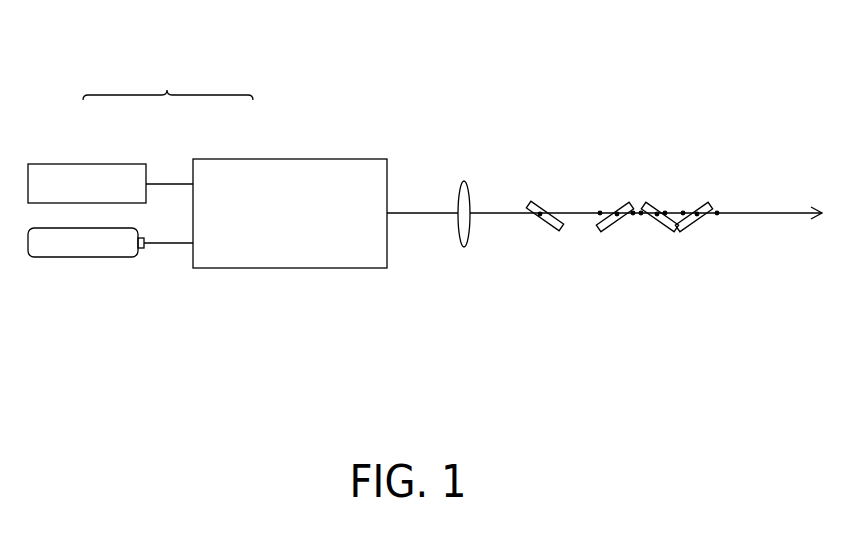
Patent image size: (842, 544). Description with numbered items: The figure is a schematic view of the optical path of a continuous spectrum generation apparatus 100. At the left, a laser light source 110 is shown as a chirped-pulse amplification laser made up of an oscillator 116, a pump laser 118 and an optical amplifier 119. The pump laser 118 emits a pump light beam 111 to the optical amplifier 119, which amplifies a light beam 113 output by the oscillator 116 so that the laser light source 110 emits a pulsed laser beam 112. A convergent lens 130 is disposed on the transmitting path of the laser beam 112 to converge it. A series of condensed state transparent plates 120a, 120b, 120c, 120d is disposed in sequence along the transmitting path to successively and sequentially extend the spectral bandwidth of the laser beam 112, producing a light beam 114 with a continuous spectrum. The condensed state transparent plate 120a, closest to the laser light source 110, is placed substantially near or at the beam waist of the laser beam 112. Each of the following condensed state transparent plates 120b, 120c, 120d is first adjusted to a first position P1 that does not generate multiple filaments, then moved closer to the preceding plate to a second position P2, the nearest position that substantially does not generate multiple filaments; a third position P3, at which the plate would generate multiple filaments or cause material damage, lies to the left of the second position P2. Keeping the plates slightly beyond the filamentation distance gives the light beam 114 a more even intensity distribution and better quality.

The continuous spectrum generation apparatus 100 is at (808, 353).
The laser light source 110 is at (168, 79).
The pump light beam 111 is at (153, 245).
The laser beam 112 is at (425, 210).
The light beam 113 is at (182, 185).
The light beam 114 is at (793, 215).
The oscillator 116 is at (102, 178).
The pump laser 118 is at (130, 237).
The optical amplifier 119 is at (235, 172).
The condensed state transparent plate 120a is at (531, 205).
The condensed state transparent plate 120b is at (615, 205).
The condensed state transparent plate 120c is at (655, 205).
The condensed state transparent plate 120d is at (706, 207).
The convergent lens 130 is at (464, 181).
The first position P1 is at (633, 214).
The second position P2 is at (547, 227).
The third position P3 is at (600, 214).